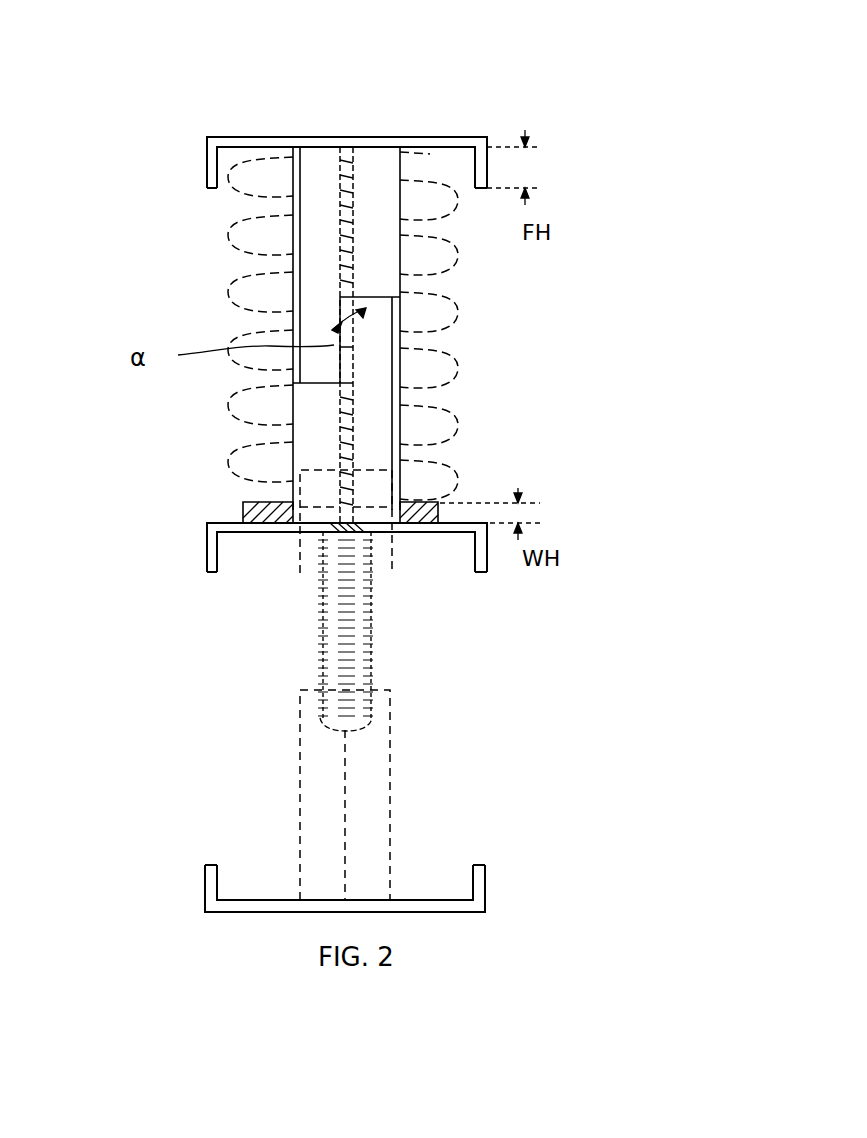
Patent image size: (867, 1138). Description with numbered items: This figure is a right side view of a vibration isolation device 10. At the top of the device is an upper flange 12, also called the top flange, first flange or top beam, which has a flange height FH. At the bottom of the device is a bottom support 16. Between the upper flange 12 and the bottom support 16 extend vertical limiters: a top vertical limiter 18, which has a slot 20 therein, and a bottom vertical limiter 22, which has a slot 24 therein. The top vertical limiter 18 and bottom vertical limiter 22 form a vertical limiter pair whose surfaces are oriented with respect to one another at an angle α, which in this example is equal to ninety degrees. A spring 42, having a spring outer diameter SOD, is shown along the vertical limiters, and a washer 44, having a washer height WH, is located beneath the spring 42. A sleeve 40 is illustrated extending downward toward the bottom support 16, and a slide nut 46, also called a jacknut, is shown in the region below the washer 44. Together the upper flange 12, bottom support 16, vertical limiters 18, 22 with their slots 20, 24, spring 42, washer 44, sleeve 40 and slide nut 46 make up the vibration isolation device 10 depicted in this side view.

The vibration isolation device 10 is at (718, 266).
The upper flange 12 is at (461, 140).
The bottom support 16 is at (444, 905).
The top vertical limiter 18 is at (320, 183).
The slot 20 is at (344, 168).
The bottom vertical limiter 22 is at (378, 400).
The slot 24 is at (357, 440).
The sleeve 40 is at (373, 824).
The spring 42 is at (250, 287).
The washer 44 is at (252, 503).
The slide nut 46 is at (392, 563).